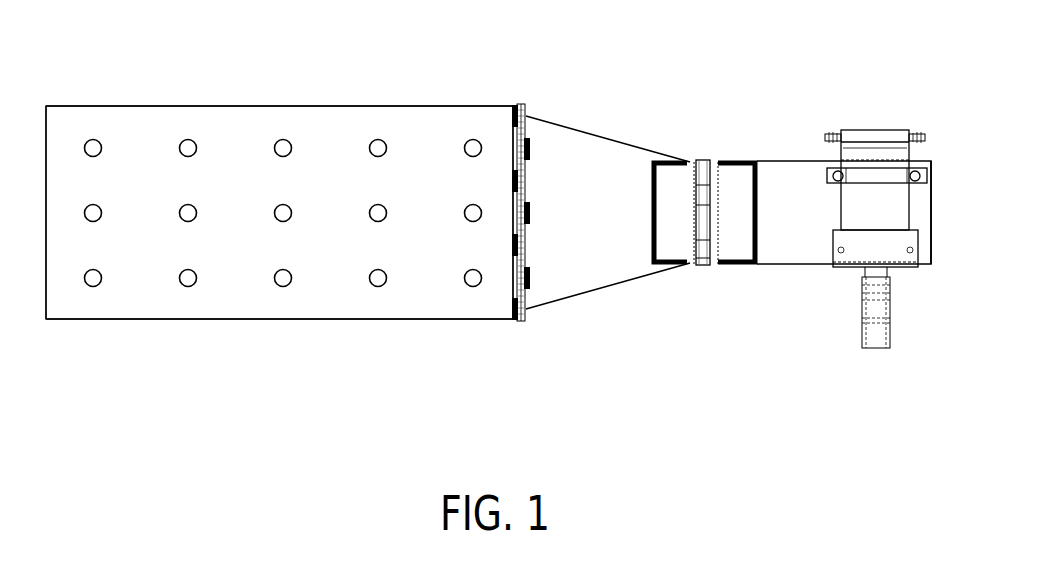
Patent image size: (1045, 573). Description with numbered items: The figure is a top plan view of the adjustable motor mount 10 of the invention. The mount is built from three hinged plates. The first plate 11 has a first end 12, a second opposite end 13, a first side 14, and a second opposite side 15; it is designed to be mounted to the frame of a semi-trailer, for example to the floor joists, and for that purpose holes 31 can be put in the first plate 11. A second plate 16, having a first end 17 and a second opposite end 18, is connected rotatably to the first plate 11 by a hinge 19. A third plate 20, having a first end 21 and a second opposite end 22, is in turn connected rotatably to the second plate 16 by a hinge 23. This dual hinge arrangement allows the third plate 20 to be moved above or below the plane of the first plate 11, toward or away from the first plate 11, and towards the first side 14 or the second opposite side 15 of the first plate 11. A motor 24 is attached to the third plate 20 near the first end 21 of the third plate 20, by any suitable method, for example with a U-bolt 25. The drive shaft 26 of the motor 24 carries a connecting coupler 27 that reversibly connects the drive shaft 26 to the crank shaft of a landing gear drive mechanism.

The adjustable motor mount 10 is at (553, 64).
The first plate 11 is at (244, 200).
The first end 12 is at (512, 320).
The second opposite end 13 is at (58, 321).
The first side 14 is at (280, 320).
The second opposite side 15 is at (280, 106).
The second plate 16 is at (596, 230).
The first end 17 is at (688, 265).
The second opposite end 18 is at (529, 321).
The hinge 19 is at (518, 212).
The third plate 20 is at (809, 232).
The first end 21 is at (927, 268).
The second opposite end 22 is at (757, 267).
The hinge 23 is at (701, 170).
The motor 24 is at (880, 148).
The U-bolt 25 is at (843, 175).
The drive shaft 26 is at (870, 272).
The connecting coupler 27 is at (877, 340).
The holes 31 is at (98, 209).